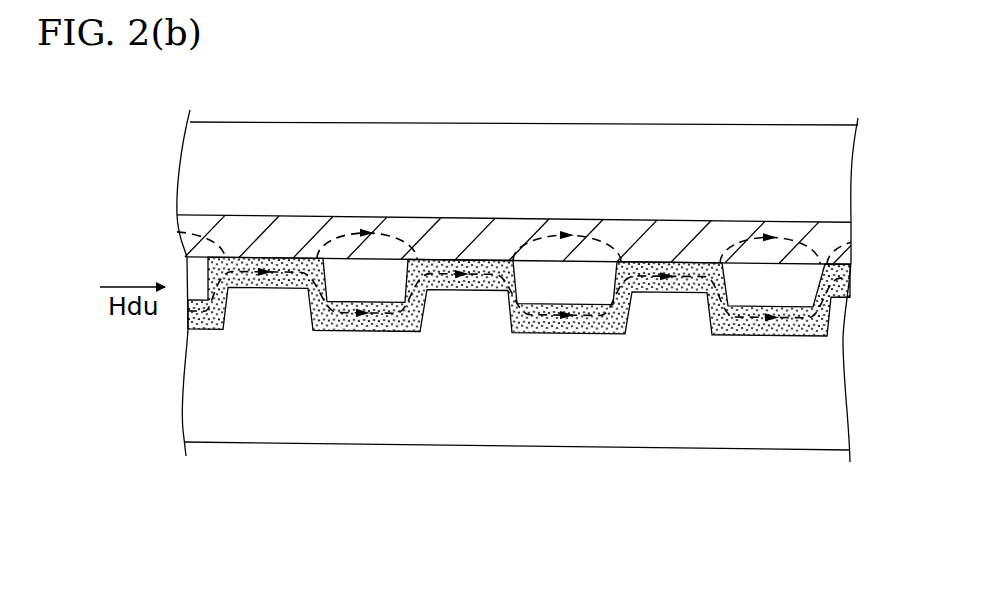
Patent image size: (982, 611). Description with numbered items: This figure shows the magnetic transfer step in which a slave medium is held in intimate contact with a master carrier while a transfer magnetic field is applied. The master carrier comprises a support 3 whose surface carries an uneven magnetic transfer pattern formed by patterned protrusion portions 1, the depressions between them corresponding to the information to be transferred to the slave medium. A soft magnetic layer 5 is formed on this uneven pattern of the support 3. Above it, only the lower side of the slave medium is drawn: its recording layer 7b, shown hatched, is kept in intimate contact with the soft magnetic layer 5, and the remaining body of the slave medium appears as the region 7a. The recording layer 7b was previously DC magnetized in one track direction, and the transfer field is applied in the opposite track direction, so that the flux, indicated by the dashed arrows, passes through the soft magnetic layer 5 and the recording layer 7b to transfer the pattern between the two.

The protrusion portion 1 is at (342, 258).
The support 3 is at (833, 400).
The soft magnetic layer 5 is at (840, 285).
The main pole of magnetic head 7a is at (836, 176).
The recording layer 7b is at (840, 236).